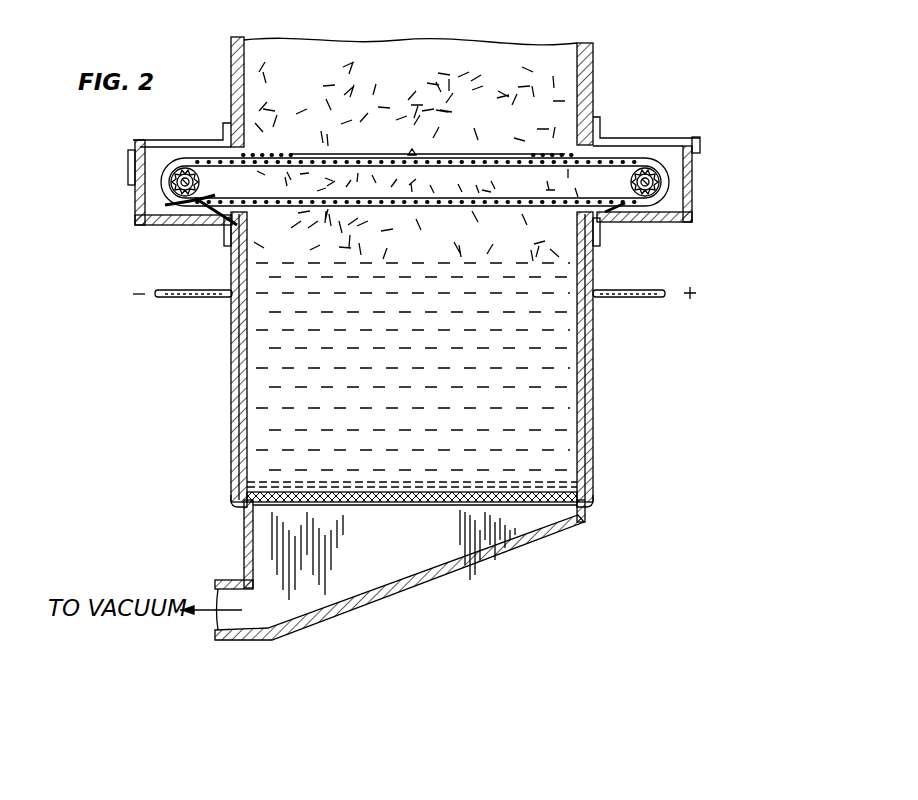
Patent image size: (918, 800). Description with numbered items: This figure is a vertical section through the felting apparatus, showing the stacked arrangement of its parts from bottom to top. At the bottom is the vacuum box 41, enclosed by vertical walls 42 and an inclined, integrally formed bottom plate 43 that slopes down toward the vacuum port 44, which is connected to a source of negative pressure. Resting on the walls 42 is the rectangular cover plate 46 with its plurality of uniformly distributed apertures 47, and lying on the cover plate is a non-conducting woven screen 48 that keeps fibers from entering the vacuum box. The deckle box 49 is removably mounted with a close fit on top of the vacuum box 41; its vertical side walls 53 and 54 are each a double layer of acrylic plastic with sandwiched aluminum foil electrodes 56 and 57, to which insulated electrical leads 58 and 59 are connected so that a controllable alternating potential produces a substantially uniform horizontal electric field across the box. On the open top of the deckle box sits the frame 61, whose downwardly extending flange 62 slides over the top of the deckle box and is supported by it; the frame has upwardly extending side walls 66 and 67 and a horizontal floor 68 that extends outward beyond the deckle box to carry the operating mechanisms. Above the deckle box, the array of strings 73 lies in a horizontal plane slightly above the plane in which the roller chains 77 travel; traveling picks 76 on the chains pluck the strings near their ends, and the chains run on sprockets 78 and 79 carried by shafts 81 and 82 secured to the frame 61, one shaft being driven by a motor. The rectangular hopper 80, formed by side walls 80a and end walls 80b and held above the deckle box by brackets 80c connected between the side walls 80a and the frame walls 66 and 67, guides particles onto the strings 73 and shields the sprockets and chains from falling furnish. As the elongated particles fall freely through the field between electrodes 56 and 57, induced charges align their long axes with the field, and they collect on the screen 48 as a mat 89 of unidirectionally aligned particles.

The vacuum box 41 is at (404, 587).
The vertical walls 42 is at (243, 540).
The inclined bottom plate 43 is at (448, 585).
The vacuum port 44 is at (220, 624).
The cover plate 46 is at (383, 506).
The apertures 47 is at (438, 506).
The woven screen 48 is at (585, 487).
The deckle box 49 is at (414, 359).
The side wall 53 is at (236, 447).
The side wall 54 is at (595, 365).
The aluminum foil electrode 56 is at (237, 338).
The aluminum foil electrode 57 is at (595, 323).
The insulated electrical lead 58 is at (194, 291).
The insulated electrical lead 59 is at (655, 290).
The frame 61 is at (399, 202).
The flange 62 is at (602, 242).
The side wall 66 is at (132, 162).
The side wall 67 is at (702, 160).
The horizontal floor 68 is at (170, 226).
The array of strings 73 is at (422, 150).
The traveling picks 76 is at (245, 152).
The roller chains 77 is at (356, 165).
The sprocket 78 is at (171, 170).
The sprocket 79 is at (672, 172).
The hopper 80 is at (430, 78).
The side walls 80a is at (240, 52).
The end walls 80b is at (416, 50).
The brackets 80c is at (218, 140).
The shaft 81 is at (182, 180).
The shaft 82 is at (652, 186).
The mat 89 is at (385, 482).